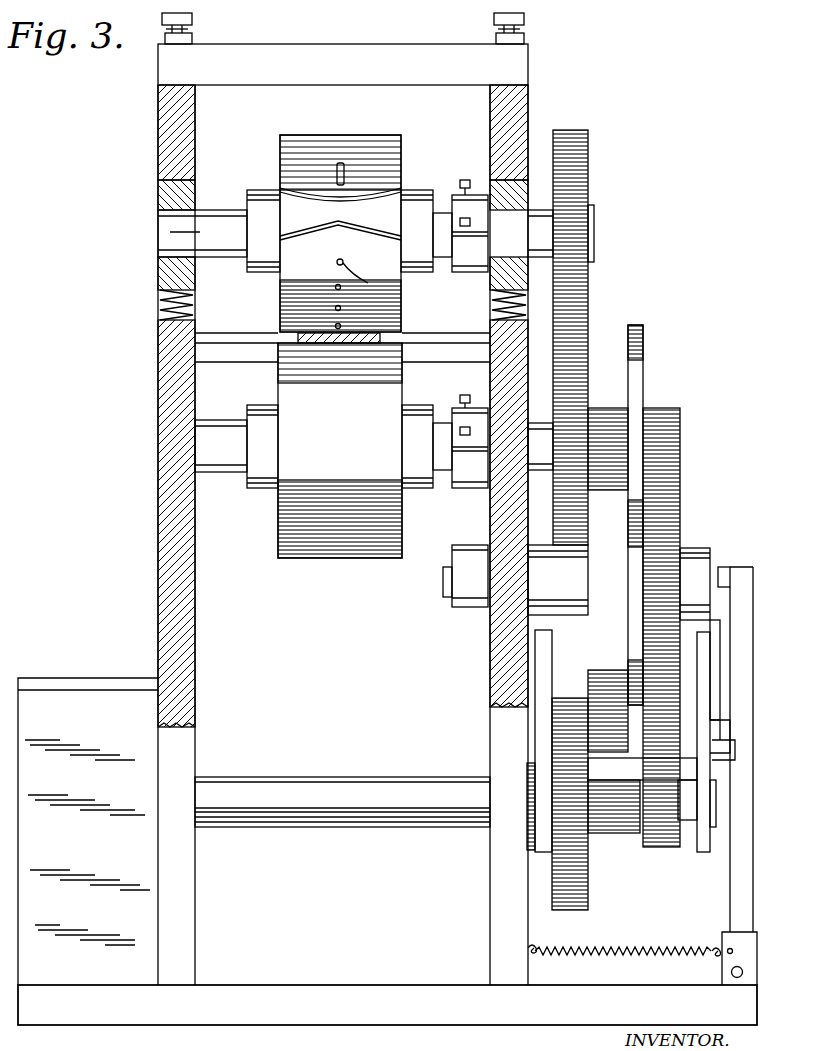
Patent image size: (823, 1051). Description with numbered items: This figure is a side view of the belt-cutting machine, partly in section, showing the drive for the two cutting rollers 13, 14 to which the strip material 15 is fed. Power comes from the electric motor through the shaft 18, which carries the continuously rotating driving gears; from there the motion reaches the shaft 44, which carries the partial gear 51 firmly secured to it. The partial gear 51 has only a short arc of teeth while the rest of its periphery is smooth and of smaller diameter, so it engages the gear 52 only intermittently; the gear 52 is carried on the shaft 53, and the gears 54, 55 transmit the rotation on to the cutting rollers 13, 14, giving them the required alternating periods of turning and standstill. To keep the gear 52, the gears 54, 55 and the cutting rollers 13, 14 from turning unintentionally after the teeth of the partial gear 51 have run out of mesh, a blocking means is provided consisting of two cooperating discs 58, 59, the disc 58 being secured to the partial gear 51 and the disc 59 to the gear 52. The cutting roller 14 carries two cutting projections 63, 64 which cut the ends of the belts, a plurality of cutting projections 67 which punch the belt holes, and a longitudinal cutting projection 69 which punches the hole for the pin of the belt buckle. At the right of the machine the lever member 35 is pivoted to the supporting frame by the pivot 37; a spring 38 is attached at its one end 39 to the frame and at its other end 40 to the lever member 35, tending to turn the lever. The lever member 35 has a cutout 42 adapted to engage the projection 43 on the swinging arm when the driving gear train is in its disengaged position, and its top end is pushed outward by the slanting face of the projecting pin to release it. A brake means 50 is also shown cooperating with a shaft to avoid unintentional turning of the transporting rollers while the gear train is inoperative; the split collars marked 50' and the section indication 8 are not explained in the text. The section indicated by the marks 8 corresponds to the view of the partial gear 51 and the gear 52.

The cutting roller 13 is at (298, 548).
The cutting roller 14 is at (337, 218).
The strip material 15 is at (312, 345).
The shaft 18 is at (311, 808).
The lever member 35 is at (757, 563).
The pivot 37 is at (731, 972).
The spring 38 is at (622, 953).
The end of spring 39 is at (532, 946).
The end of spring 40 is at (722, 945).
The cutout 42 is at (714, 755).
The projection 43 is at (718, 745).
The shaft 44 is at (566, 580).
The brake means 50 is at (732, 560).
The split collar 50' is at (464, 352).
The partial gear 51 is at (608, 711).
The gear 52 is at (613, 481).
The shaft 53 is at (225, 458).
The gear 54 is at (580, 320).
The gear 55 is at (591, 321).
The disc 58 is at (637, 575).
The disc 59 is at (645, 350).
The cutting projection 63 is at (372, 192).
The cutting projection 64 is at (360, 226).
The cutting projections 67 is at (342, 322).
The longitudinal cutting projection 69 is at (343, 163).
The section line 8- 8 is at (680, 158).